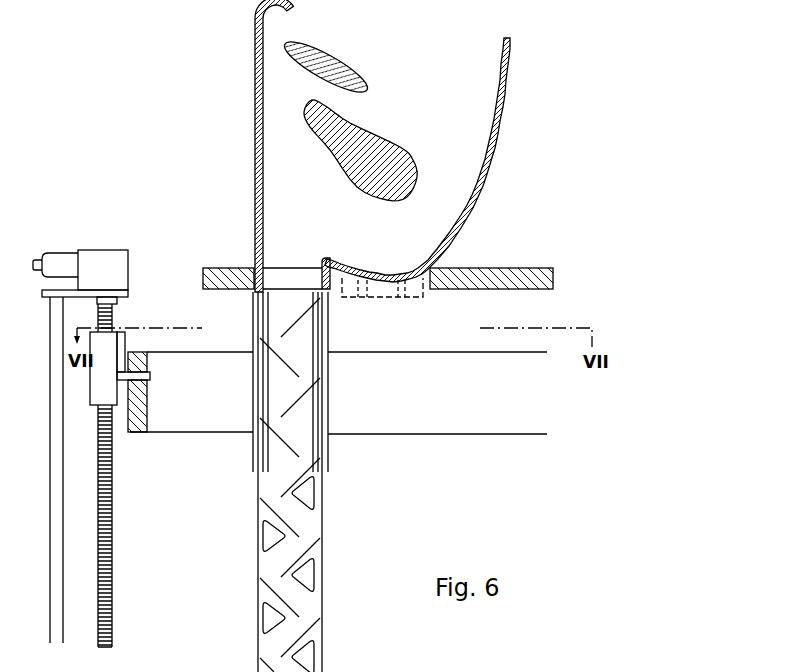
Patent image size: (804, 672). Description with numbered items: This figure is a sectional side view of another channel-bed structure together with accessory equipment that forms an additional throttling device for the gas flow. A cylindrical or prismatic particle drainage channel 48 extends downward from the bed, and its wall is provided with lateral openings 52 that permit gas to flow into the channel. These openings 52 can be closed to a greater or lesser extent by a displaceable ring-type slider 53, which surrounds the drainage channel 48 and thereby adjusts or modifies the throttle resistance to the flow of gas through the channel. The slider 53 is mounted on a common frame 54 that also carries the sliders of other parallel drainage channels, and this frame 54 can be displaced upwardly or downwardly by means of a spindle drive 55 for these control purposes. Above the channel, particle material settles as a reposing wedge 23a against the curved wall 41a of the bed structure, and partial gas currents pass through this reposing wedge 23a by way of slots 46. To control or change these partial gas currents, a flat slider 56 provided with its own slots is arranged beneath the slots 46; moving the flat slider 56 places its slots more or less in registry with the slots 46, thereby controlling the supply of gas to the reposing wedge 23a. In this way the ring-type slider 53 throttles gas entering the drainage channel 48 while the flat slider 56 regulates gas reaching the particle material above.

The reposing wedge of particle material 23a is at (382, 232).
The curved wall of receptacle 41a is at (472, 211).
The slots 46 is at (378, 274).
The drainage channel 48 is at (270, 593).
The lateral openings 52 is at (272, 537).
The ring-type slider 53 is at (257, 394).
The common frame 54 is at (187, 418).
The spindle drive 55 is at (97, 257).
The flat slider with slots 56 is at (375, 298).